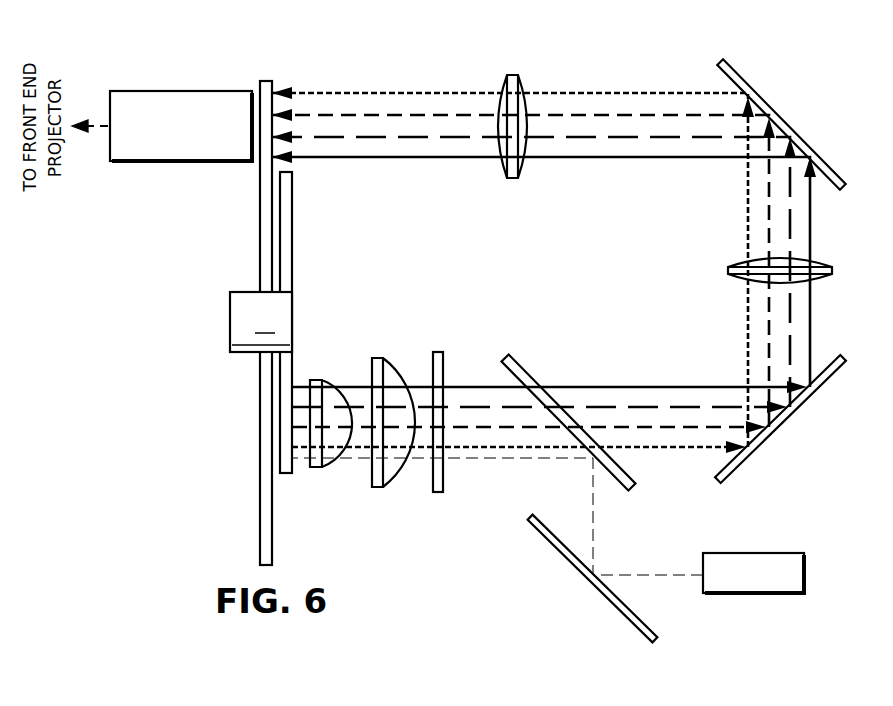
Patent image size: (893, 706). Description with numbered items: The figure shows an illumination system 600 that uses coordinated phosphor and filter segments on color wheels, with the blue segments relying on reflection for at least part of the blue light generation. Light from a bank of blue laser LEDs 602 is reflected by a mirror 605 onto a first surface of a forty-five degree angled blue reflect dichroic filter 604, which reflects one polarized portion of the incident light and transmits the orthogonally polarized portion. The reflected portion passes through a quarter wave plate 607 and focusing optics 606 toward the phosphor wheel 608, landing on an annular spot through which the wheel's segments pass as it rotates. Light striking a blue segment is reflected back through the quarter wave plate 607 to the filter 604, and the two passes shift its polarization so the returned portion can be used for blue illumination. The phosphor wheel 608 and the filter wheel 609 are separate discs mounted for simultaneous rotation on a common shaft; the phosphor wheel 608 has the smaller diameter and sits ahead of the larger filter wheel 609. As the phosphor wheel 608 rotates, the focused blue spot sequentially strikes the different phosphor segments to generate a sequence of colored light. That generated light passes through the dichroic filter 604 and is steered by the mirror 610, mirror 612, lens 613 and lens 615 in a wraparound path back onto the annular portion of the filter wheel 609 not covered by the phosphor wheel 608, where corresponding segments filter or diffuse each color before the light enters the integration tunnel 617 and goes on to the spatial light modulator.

The illumination system 600 is at (325, 57).
The bank of blue laser LEDs 602 is at (757, 595).
The blue reflect dichroic filter 604 is at (505, 358).
The mirror 605 is at (598, 588).
The focusing optics 606 is at (381, 340).
The quarter wave plate 607 is at (438, 493).
The phosphor wheel 608 is at (294, 262).
The filter wheel 609 is at (260, 262).
The mirror 610 is at (748, 460).
The mirror 612 is at (737, 78).
The lens 613 is at (730, 268).
The lens 615 is at (510, 75).
The integration tunnel 617 is at (181, 91).